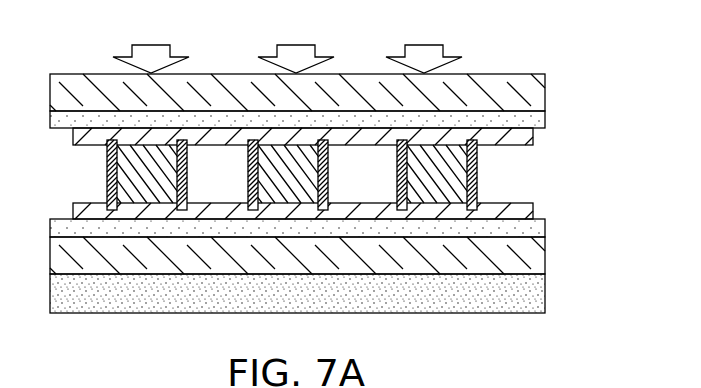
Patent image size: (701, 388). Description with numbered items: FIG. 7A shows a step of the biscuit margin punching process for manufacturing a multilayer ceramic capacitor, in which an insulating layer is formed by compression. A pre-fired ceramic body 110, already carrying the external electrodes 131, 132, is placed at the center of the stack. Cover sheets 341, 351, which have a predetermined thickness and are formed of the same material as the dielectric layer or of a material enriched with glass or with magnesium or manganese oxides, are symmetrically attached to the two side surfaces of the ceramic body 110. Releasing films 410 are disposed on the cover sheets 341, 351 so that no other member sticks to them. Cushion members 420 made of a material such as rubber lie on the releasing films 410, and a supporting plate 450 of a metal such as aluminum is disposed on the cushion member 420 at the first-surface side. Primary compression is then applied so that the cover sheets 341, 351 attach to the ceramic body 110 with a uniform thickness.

The ceramic body 110 is at (442, 173).
The external electrode 131 is at (397, 157).
The external electrode 132 is at (477, 156).
The cover sheet 341 is at (525, 212).
The cover sheet 351 is at (525, 137).
The releasing film 410 is at (537, 123).
The cushion member 420 is at (537, 94).
The supporting plate 450 is at (537, 297).